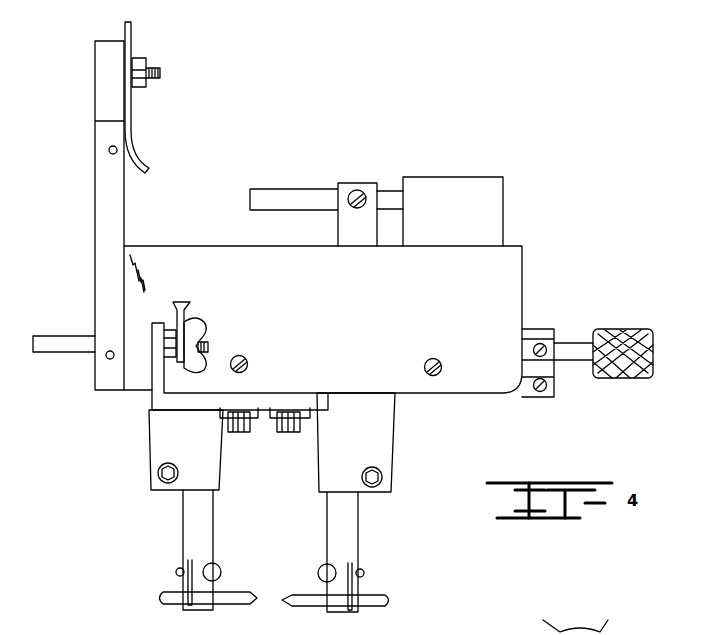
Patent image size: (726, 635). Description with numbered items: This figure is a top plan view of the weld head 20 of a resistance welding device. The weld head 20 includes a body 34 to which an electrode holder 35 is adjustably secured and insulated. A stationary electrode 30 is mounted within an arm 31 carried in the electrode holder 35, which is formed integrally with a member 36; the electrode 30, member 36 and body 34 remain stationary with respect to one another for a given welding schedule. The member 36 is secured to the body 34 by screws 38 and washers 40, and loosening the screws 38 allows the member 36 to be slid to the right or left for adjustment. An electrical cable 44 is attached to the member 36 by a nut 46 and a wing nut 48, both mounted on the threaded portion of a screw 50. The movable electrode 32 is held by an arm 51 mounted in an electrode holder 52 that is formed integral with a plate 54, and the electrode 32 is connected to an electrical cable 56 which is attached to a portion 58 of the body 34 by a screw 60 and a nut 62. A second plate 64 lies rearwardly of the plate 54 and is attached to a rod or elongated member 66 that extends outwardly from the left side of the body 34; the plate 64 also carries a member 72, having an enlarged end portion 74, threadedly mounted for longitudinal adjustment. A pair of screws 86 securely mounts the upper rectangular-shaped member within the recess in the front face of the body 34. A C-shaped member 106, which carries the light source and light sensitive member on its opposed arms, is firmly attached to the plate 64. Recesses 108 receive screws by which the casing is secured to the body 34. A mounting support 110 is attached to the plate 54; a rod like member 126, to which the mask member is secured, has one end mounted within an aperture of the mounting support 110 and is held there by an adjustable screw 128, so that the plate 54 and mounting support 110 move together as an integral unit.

The weld head 20 is at (508, 241).
The electrode 30 is at (237, 595).
The arm 31 is at (186, 536).
The electrode 32 is at (305, 606).
The body 34 is at (172, 246).
The electrode holder 35 is at (152, 455).
The member 36 is at (148, 397).
The screws 38 is at (280, 432).
The washers 40 is at (290, 410).
The electrical cable 44 is at (185, 302).
The nut 46 is at (170, 330).
The wing nut 48 is at (205, 322).
The screw 50 is at (208, 345).
The arm 51 is at (358, 538).
The electrode holder 52 is at (390, 446).
The plate 54 is at (528, 398).
The electrical cable 56 is at (132, 30).
The portion of the body 58 is at (95, 90).
The screw 60 is at (161, 73).
The nut 62 is at (144, 58).
The second plate 64 is at (532, 329).
The rod or elongated member 66 is at (46, 352).
The member 72 is at (570, 342).
The enlarged end portion 74 is at (640, 328).
The screws 86 is at (246, 360).
The C-shaped member 106 is at (505, 177).
The recesses 108 is at (109, 151).
The mounting support 110 is at (336, 180).
The rod like member 126 is at (390, 190).
The adjustable screw 128 is at (352, 190).